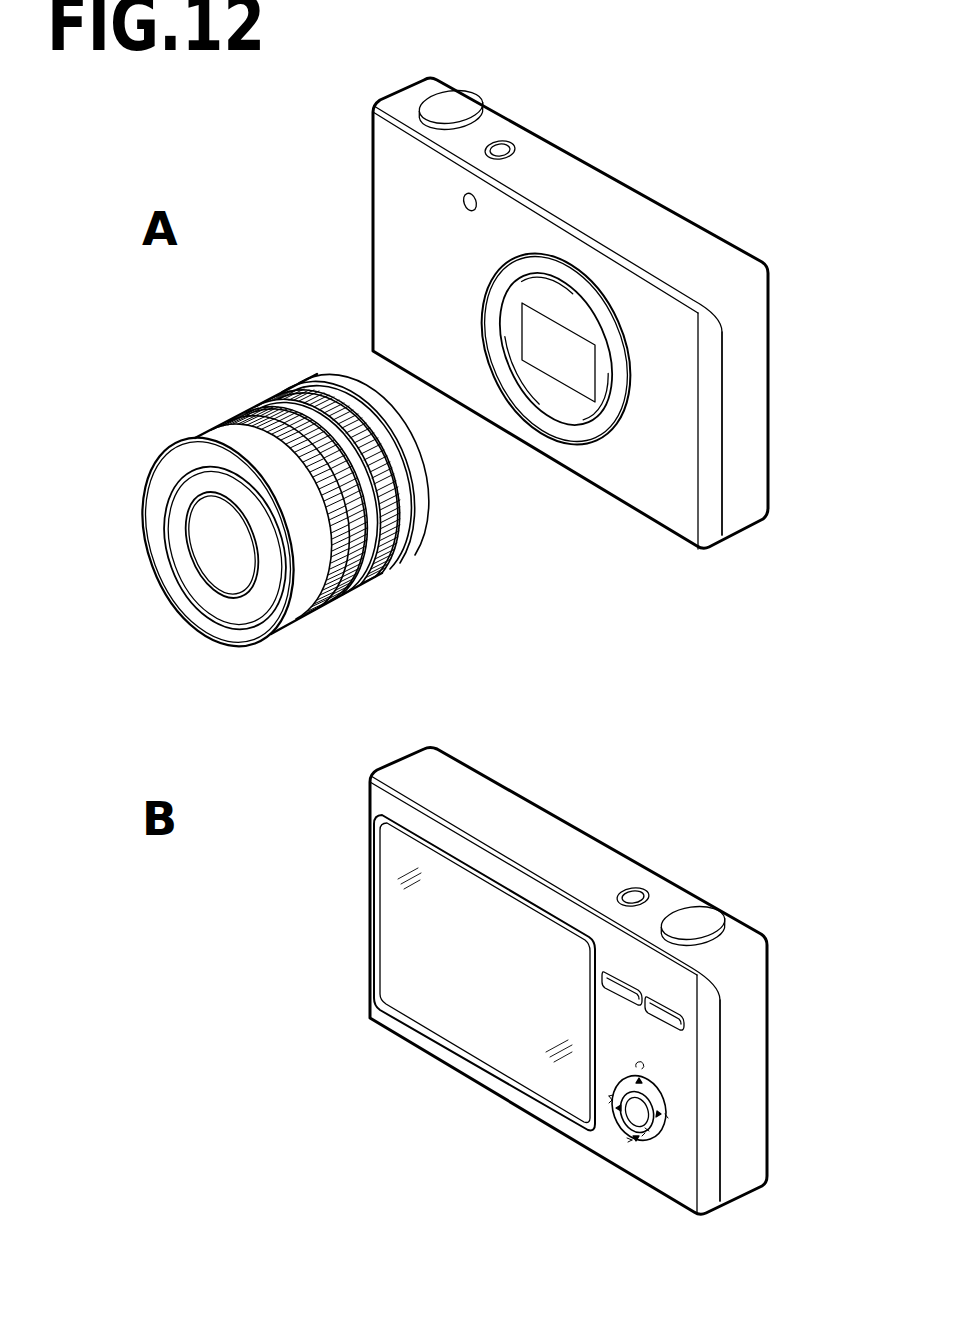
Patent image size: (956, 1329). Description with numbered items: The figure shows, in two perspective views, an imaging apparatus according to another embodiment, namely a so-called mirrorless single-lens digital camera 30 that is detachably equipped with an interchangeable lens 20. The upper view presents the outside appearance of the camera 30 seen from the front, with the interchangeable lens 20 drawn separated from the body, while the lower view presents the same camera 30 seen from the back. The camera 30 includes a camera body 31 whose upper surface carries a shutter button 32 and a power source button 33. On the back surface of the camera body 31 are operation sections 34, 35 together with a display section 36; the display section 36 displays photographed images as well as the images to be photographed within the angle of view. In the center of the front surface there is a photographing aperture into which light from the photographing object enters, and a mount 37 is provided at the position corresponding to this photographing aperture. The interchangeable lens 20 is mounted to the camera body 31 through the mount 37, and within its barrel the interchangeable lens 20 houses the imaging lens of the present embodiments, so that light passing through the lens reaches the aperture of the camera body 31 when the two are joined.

The interchangeable lens 20 is at (207, 443).
The camera 30 is at (705, 151).
The camera body 31 is at (757, 366).
The shutter button 32 is at (460, 96).
The power source button 33 is at (504, 147).
The operation section 34 is at (683, 1032).
The operation section 35 is at (650, 1141).
The display section 36 is at (462, 1035).
The mount 37 is at (583, 433).